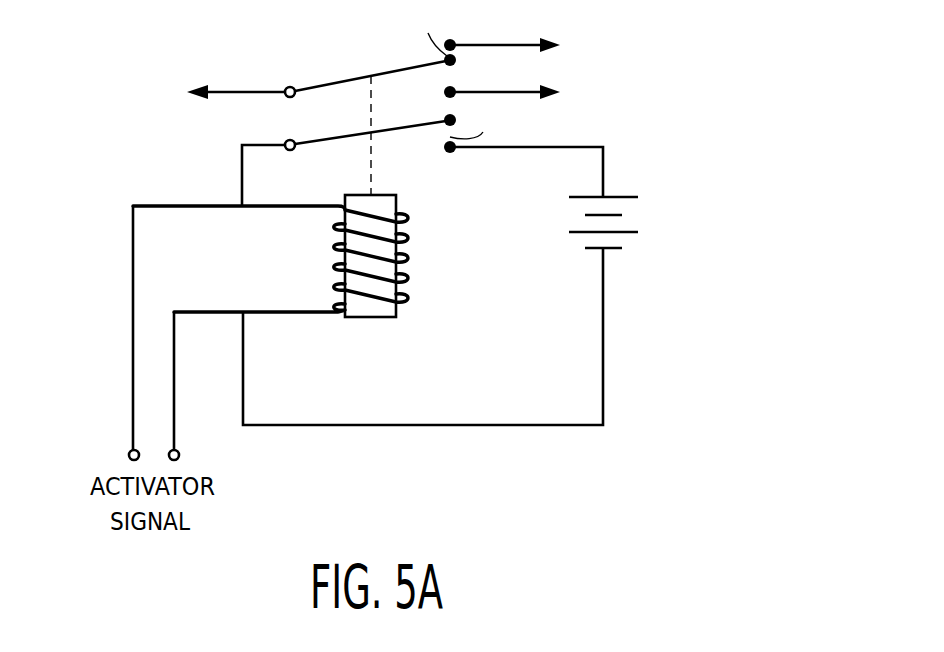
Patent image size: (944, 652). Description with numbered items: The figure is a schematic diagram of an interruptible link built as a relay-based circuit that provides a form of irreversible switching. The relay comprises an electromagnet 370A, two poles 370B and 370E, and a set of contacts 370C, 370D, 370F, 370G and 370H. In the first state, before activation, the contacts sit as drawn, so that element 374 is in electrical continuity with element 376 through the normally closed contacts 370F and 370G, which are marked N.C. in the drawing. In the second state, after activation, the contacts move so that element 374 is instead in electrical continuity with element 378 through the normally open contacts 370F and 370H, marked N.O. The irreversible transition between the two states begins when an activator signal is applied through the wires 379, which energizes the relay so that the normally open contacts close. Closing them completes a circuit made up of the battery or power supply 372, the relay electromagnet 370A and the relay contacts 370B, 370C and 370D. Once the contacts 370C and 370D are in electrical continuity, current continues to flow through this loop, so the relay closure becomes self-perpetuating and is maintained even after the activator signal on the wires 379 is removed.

The electromagnet 370A is at (365, 318).
The pole 370B is at (336, 139).
The contact 370C is at (447, 124).
The contact 370D is at (452, 151).
The pole 370E is at (331, 84).
The contact 370F is at (446, 57).
The contact 370G is at (452, 42).
The contact 370H is at (452, 89).
The battery or power supply 372 is at (628, 200).
The element 374 is at (225, 95).
The element 376 is at (528, 48).
The element 378 is at (528, 95).
The wires 379 is at (133, 279).